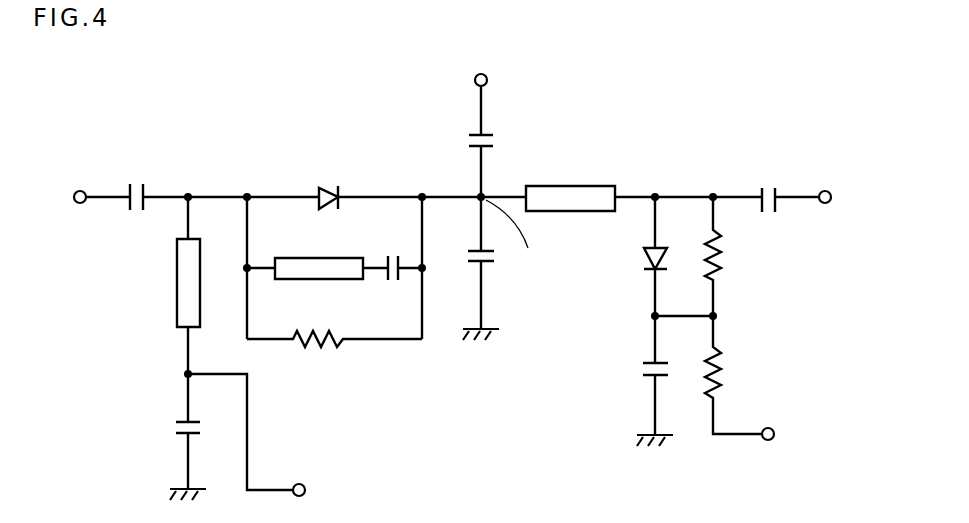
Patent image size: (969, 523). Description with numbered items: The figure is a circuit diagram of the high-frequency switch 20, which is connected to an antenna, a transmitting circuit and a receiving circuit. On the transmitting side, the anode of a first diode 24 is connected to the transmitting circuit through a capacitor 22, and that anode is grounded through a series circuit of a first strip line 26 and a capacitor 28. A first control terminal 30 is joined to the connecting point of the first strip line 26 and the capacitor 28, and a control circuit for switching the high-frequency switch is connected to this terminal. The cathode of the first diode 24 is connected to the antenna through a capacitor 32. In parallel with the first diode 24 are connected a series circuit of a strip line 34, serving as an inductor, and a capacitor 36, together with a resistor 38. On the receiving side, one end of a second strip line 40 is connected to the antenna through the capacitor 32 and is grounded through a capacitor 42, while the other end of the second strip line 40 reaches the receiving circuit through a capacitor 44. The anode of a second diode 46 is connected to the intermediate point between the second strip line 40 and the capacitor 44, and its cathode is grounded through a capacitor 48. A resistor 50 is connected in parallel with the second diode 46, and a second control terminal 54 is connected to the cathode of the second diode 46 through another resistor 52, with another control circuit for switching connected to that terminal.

The high-frequency switch 20 is at (703, 94).
The capacitor 22 is at (145, 186).
The first diode 24 is at (330, 188).
The first strip line 26 is at (177, 285).
The capacitor 28 is at (186, 420).
The first control terminal 30 is at (306, 490).
The capacitor 32 is at (488, 134).
The strip line 34 is at (300, 279).
The capacitor 36 is at (386, 282).
The resistor 38 is at (344, 341).
The second strip line 40 is at (592, 186).
The capacitor 42 is at (487, 262).
The capacitor 44 is at (760, 190).
The second diode 46 is at (641, 256).
The capacitor 48 is at (651, 378).
The resistor 50 is at (720, 277).
The resistor 52 is at (718, 392).
The second control terminal 54 is at (773, 440).